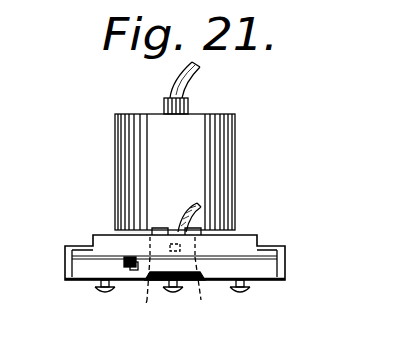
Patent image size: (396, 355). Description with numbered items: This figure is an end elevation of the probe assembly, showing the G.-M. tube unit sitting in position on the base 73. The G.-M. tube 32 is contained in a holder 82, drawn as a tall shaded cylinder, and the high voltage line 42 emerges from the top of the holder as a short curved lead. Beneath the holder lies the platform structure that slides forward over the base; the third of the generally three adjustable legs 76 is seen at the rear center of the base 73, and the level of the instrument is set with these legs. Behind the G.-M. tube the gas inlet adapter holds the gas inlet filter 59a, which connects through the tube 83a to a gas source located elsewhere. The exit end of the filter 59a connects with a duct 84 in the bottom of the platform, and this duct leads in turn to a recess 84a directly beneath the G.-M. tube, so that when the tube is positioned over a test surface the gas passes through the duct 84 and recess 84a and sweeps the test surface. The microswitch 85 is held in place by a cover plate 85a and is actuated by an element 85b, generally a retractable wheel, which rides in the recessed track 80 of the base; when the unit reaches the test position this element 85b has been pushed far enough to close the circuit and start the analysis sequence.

The high voltage line 42 is at (200, 63).
The G.-M. tube 32 is at (189, 104).
The holder 82 is at (221, 174).
The tube 83a is at (198, 209).
The cover plate 85a is at (117, 231).
The microswitch 85 is at (120, 245).
The element 85b is at (128, 261).
The duct 84 is at (181, 247).
The recess 84a is at (181, 284).
The gas inlet filter 59a is at (166, 314).
The recessed track 80 is at (134, 266).
The base 73 is at (218, 281).
The adjustable legs 76 is at (246, 292).